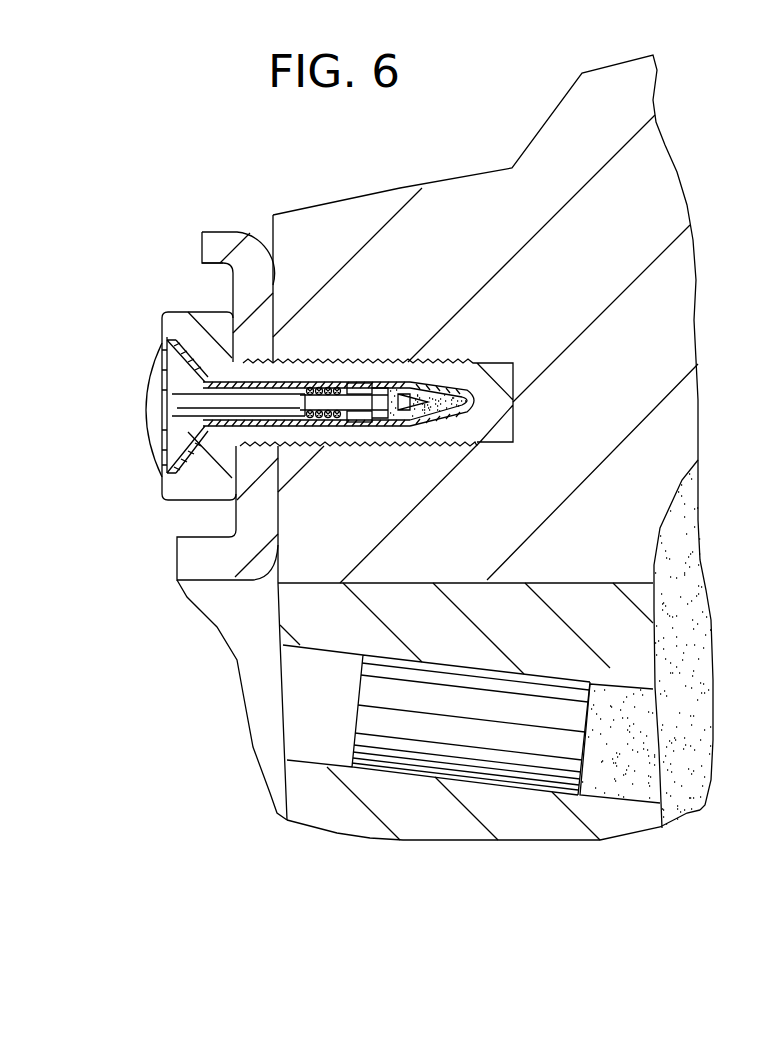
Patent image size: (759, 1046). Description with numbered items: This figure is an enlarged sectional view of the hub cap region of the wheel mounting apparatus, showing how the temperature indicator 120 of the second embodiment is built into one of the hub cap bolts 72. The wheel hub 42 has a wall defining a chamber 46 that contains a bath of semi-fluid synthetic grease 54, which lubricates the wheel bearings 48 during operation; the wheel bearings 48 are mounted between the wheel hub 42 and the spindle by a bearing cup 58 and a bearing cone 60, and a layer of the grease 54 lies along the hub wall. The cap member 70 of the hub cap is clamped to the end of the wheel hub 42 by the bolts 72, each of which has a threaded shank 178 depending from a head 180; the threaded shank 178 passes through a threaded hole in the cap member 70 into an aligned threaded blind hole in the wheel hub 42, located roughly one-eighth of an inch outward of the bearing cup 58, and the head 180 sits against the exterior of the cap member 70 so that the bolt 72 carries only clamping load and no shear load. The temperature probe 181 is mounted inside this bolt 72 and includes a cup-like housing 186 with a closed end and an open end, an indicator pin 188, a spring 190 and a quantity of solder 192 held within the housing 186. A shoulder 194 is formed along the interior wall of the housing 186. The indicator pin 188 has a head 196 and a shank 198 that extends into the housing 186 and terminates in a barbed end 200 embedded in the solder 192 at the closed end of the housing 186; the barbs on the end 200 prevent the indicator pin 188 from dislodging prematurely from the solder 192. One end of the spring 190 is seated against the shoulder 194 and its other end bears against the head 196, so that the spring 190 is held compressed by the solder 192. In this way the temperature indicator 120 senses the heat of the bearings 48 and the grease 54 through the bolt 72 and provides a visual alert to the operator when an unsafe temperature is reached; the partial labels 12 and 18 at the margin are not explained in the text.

The wheel hub 42 is at (487, 193).
The cap member 70 is at (237, 240).
The bolt 72 is at (205, 308).
The temperature indicator 120 is at (152, 340).
The head 196 is at (140, 395).
The temperature probe 181 is at (142, 425).
The indicator pin 188 is at (157, 463).
The head 180 is at (198, 487).
The shank 198 is at (283, 392).
The housing 186 is at (317, 380).
The shoulder 194 is at (358, 390).
The threaded shank 178 is at (457, 375).
The spring 190 is at (332, 418).
The barbed end 200 is at (407, 425).
The solder 192 is at (447, 407).
The bearing cup 58 is at (572, 593).
The wheel bearings 48 is at (518, 778).
The bearing cone 60 is at (307, 795).
The semi-fluid synthetic grease 54 is at (690, 648).
The chamber 46 is at (703, 752).
The apparatus 12 is at (753, 283).
The housing 18 is at (750, 428).